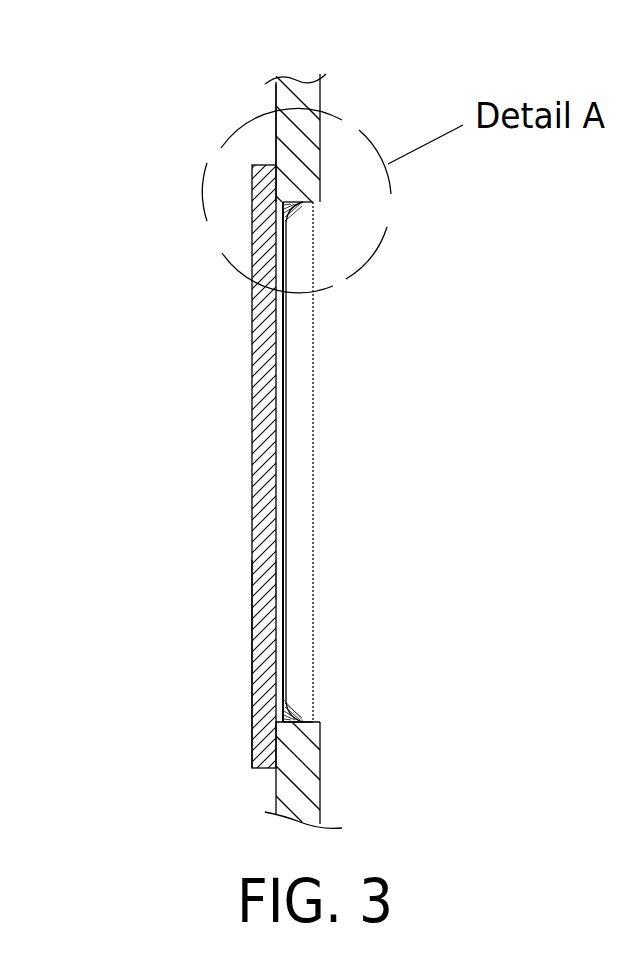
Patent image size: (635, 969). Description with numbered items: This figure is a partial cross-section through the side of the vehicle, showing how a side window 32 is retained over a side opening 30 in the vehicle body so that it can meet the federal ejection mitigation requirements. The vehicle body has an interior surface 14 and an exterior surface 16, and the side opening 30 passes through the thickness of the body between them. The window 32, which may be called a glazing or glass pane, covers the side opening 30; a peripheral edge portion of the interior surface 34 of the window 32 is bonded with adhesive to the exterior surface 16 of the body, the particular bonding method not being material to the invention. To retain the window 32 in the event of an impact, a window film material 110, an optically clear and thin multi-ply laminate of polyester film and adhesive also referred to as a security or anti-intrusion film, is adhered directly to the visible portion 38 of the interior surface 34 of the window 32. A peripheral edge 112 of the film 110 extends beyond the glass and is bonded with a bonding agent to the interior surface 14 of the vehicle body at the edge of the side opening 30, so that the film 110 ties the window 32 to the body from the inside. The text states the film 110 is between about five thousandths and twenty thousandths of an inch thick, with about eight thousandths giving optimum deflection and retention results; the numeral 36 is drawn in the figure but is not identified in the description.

The interior surface 14 is at (320, 95).
The exterior surface 16 is at (275, 102).
The side opening 30 is at (307, 532).
The window 32 is at (251, 429).
The interior surface 34 is at (280, 382).
The outer surface 36 is at (252, 660).
The visible portion 38 is at (280, 578).
The window film material 110 is at (280, 498).
The peripheral edge 112 is at (286, 715).